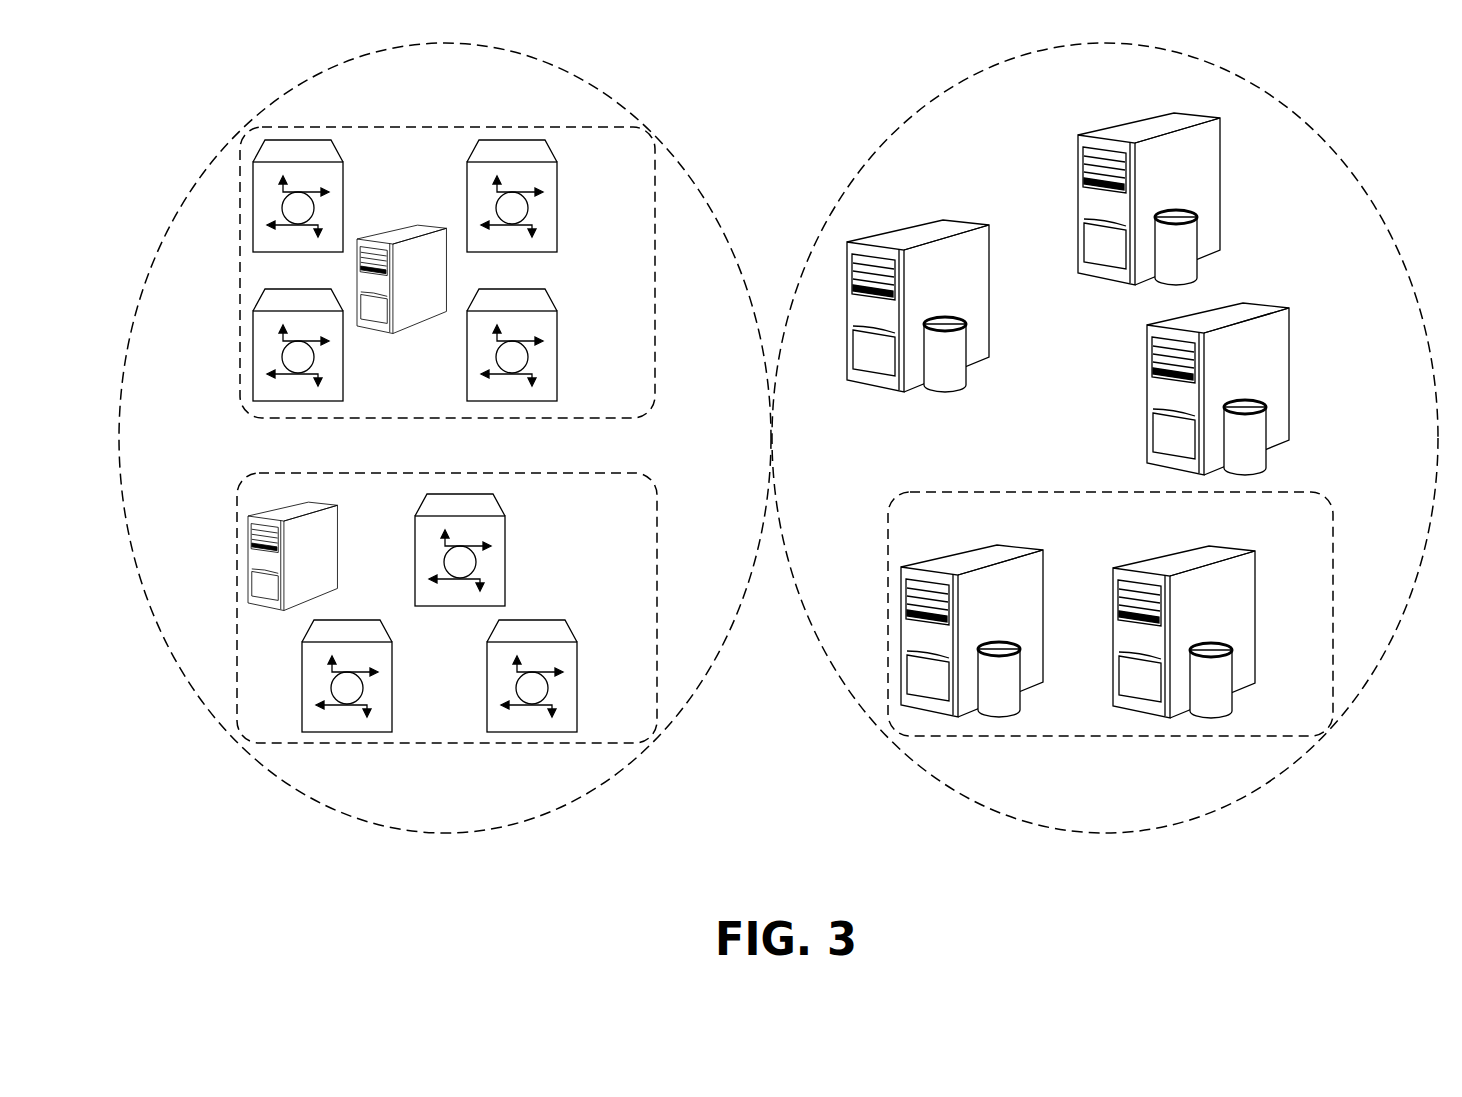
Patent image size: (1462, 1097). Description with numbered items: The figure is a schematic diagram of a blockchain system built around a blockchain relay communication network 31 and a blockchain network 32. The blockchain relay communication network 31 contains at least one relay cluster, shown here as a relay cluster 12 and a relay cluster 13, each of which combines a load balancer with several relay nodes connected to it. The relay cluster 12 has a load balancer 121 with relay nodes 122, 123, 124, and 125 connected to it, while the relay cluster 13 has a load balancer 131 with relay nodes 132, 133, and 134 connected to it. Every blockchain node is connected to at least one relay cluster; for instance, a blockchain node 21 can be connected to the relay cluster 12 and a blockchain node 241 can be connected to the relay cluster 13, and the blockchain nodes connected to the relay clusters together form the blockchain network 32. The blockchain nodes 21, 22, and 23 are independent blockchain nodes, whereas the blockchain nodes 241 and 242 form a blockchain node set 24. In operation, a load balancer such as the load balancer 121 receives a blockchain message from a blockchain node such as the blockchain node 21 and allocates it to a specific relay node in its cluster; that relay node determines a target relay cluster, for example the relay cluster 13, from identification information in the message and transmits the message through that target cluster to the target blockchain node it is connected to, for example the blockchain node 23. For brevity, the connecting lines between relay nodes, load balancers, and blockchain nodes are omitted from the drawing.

The blockchain relay communication network 31 is at (692, 200).
The blockchain network 32 is at (1375, 232).
The relay cluster 12 is at (416, 147).
The relay cluster 13 is at (400, 503).
The blockchain node set 24 is at (1323, 500).
The load balancer 121 is at (437, 292).
The relay node 122 is at (333, 210).
The relay node 123 is at (553, 210).
The relay node 124 is at (345, 382).
The relay node 125 is at (557, 382).
The load balancer 131 is at (323, 556).
The relay node 132 is at (500, 556).
The relay node 133 is at (382, 685).
The relay node 134 is at (563, 685).
The blockchain node 21 is at (1218, 187).
The blockchain node 22 is at (980, 278).
The blockchain node 23 is at (1280, 362).
The blockchain node 241 is at (1032, 640).
The blockchain node 242 is at (1240, 585).